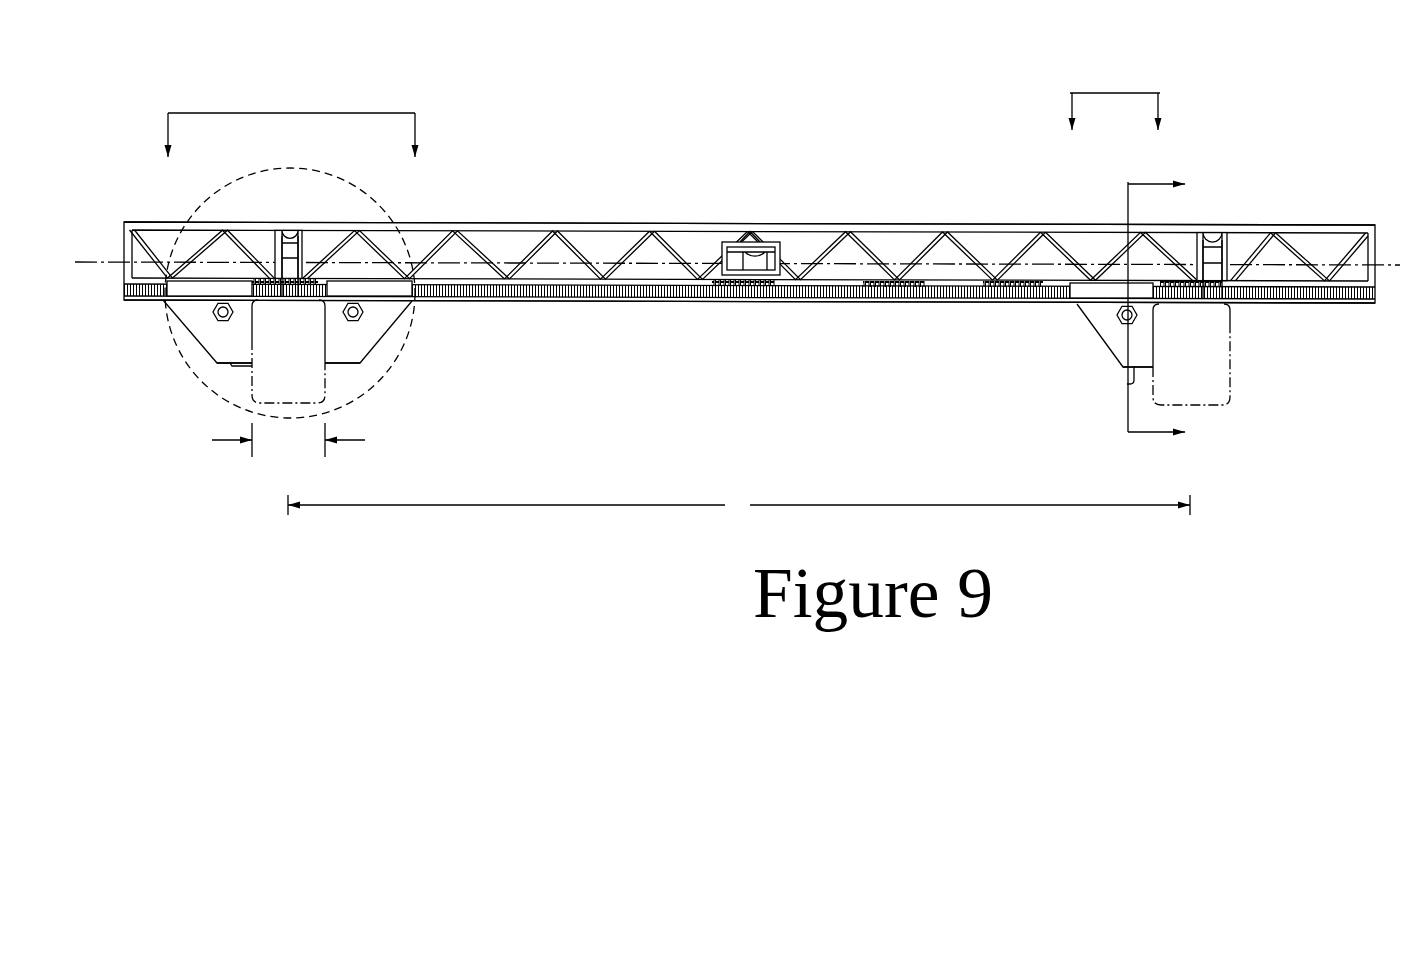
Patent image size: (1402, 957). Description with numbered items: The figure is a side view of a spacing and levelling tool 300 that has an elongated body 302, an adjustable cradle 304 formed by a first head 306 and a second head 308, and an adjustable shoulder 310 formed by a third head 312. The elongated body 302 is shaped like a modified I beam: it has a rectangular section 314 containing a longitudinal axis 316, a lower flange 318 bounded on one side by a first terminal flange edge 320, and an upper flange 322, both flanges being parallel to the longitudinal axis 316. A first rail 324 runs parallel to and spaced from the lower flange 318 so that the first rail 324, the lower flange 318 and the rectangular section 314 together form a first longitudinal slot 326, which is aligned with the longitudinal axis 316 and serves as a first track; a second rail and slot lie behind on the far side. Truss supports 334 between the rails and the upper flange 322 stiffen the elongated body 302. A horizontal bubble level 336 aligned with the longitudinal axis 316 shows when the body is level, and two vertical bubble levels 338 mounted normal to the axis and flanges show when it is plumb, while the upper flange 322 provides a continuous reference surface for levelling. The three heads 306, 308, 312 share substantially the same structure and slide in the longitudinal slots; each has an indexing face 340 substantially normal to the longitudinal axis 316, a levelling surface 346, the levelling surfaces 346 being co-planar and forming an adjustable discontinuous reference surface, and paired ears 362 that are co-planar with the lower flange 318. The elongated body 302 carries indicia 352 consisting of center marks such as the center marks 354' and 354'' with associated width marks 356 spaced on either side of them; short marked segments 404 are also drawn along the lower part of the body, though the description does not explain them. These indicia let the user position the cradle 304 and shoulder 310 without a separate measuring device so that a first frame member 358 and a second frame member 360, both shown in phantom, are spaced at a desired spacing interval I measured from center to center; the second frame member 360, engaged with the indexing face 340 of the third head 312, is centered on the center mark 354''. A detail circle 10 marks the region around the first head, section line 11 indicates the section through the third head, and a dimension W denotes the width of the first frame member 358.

The spacing and levelling tool 300 is at (1228, 78).
The elongated body 302 is at (862, 222).
The adjustable cradle 304 is at (292, 108).
The first head 306 is at (215, 345).
The second head 308 is at (387, 319).
The adjustable shoulder 310 is at (1115, 83).
The third head 312 is at (1103, 337).
The rectangular section 314 is at (695, 235).
The longitudinal axis 316 is at (1325, 265).
The lower flange 318 is at (757, 302).
The first terminal flange edge 320 is at (608, 302).
The upper flange 322 is at (913, 225).
The first rail 324 is at (538, 285).
The first longitudinal slot 326 is at (705, 300).
The truss supports 334 is at (641, 248).
The horizontal bubble level 336 is at (770, 255).
The vertical bubble levels 338 is at (302, 240).
The indexing face 340 is at (355, 364).
The levelling surface 346 is at (233, 363).
The indicia 352 is at (1020, 228).
The center mark 354' is at (325, 214).
The center mark 354'' is at (1237, 198).
The width marks 356 is at (1197, 287).
The first frame member 358 is at (260, 390).
The second frame member 360 is at (1213, 362).
The paired ears 362 is at (340, 297).
The rack teeth blocks 404 is at (900, 292).
The detail circle 10 is at (262, 175).
The section line 11 is at (1156, 306).
The width dimension W is at (288, 436).
The desired spacing interval I is at (739, 504).